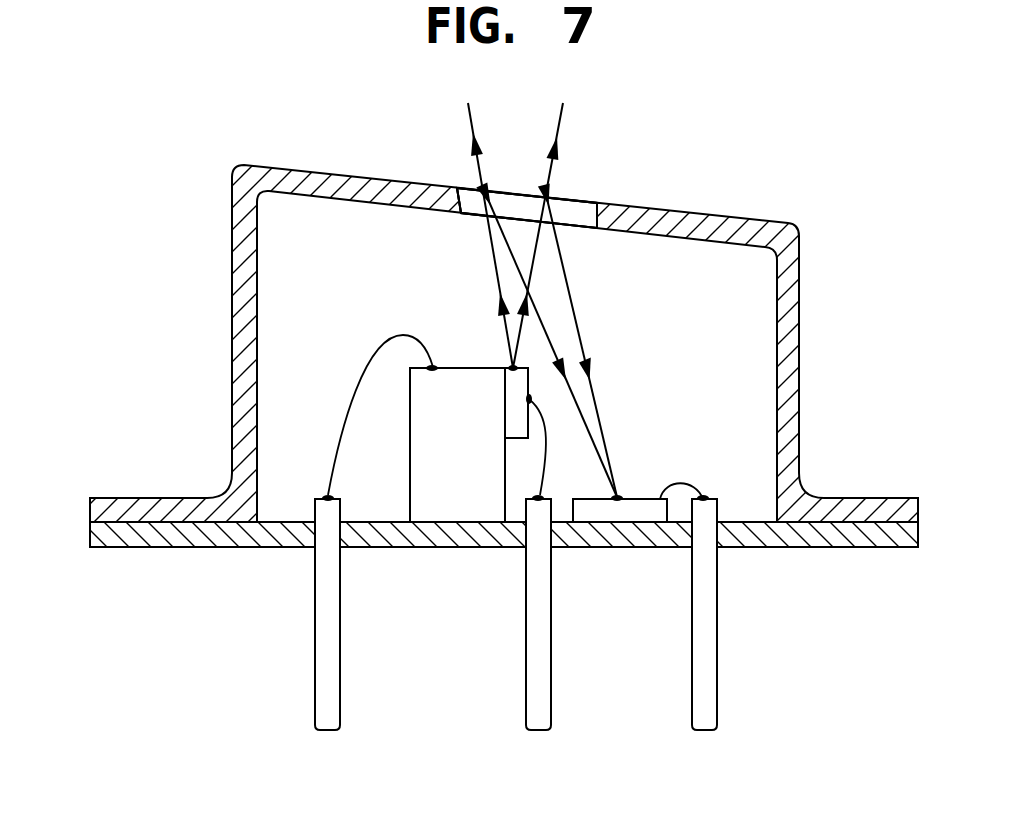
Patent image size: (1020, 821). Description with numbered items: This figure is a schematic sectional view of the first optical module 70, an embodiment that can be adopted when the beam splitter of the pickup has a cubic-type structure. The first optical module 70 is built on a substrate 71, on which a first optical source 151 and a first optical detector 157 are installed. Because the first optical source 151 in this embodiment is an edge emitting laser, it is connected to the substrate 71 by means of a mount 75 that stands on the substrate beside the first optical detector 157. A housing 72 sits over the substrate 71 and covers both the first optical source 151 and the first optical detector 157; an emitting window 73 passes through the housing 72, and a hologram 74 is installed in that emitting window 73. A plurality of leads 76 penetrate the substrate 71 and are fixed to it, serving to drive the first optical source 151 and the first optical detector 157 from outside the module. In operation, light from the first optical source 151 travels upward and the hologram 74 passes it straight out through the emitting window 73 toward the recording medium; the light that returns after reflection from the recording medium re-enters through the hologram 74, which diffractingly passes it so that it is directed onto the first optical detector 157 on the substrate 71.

The first optical module 70 is at (815, 240).
The substrate 71 is at (108, 548).
The housing 72 is at (275, 164).
The emitting window 73 is at (462, 192).
The hologram 74 is at (577, 207).
The mount 75 is at (440, 502).
The leads 76 is at (705, 648).
The first optical source 151 is at (514, 383).
The first optical detector 157 is at (618, 512).